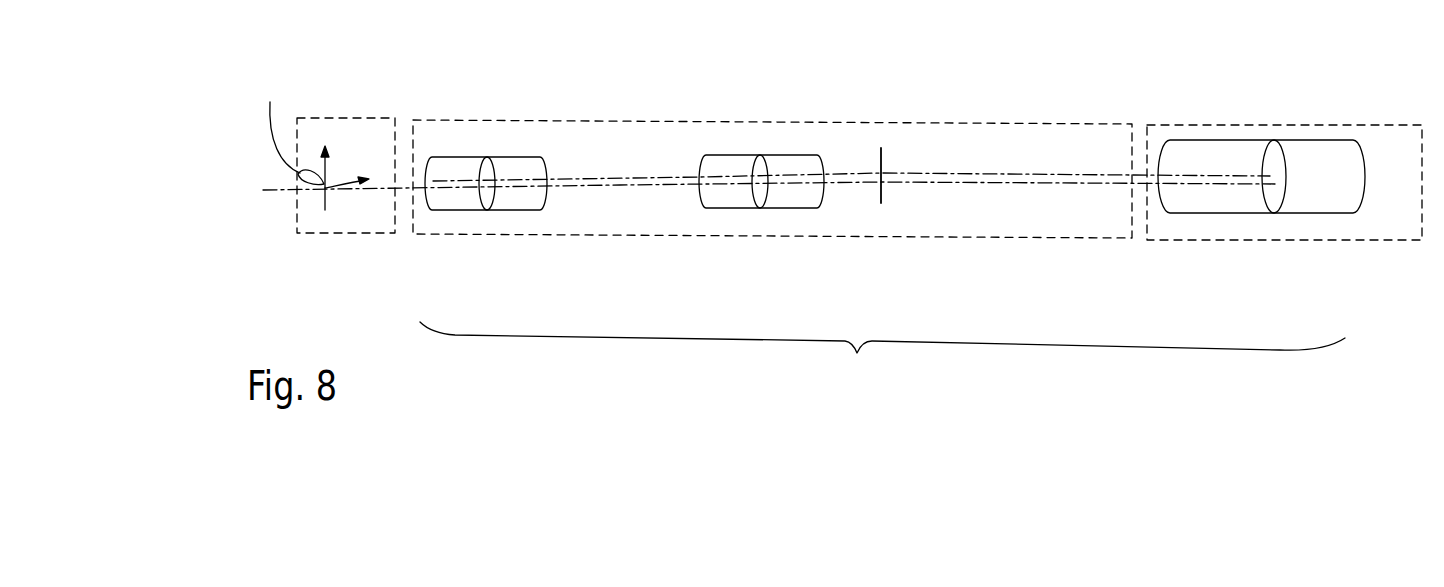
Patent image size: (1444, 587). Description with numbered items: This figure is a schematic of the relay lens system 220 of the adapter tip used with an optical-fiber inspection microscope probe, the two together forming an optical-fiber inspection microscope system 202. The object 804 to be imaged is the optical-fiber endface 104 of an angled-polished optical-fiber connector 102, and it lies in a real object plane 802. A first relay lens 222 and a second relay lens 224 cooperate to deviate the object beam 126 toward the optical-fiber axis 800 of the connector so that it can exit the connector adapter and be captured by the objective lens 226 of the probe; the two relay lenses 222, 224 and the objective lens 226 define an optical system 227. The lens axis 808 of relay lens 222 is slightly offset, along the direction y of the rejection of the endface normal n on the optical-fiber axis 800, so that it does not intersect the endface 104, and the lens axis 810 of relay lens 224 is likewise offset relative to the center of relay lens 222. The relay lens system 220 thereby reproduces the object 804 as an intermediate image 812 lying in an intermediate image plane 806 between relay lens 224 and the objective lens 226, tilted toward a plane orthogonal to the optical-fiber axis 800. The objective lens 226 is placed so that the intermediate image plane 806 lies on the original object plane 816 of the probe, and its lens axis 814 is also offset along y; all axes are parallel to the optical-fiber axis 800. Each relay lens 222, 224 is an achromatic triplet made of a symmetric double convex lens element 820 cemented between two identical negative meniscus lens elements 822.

The angled-polished optical-fiber connector 102 is at (303, 209).
The optical-fiber endface 104 is at (296, 128).
The object beam 126 is at (355, 196).
The optical-fiber inspection microscope system 202 is at (1180, 125).
The relay lens system 220 is at (958, 123).
The relay lens 222 is at (519, 157).
The relay lens 224 is at (797, 155).
The objective lens 226 is at (1250, 213).
The optical system 227 is at (882, 358).
The optical-fiber axis 800 is at (281, 193).
The real object plane 802 is at (328, 204).
The object 804 is at (316, 198).
The intermediate image plane 806 is at (881, 200).
The lens axis 808 is at (452, 180).
The lens axis 810 is at (720, 180).
The intermediate image 812 is at (881, 150).
The lens axis of the objective lens 814 is at (1224, 175).
The original object plane 816 is at (882, 191).
The symmetric double convex lens element 820 is at (493, 190).
The negative meniscus lens element 822 is at (450, 204).